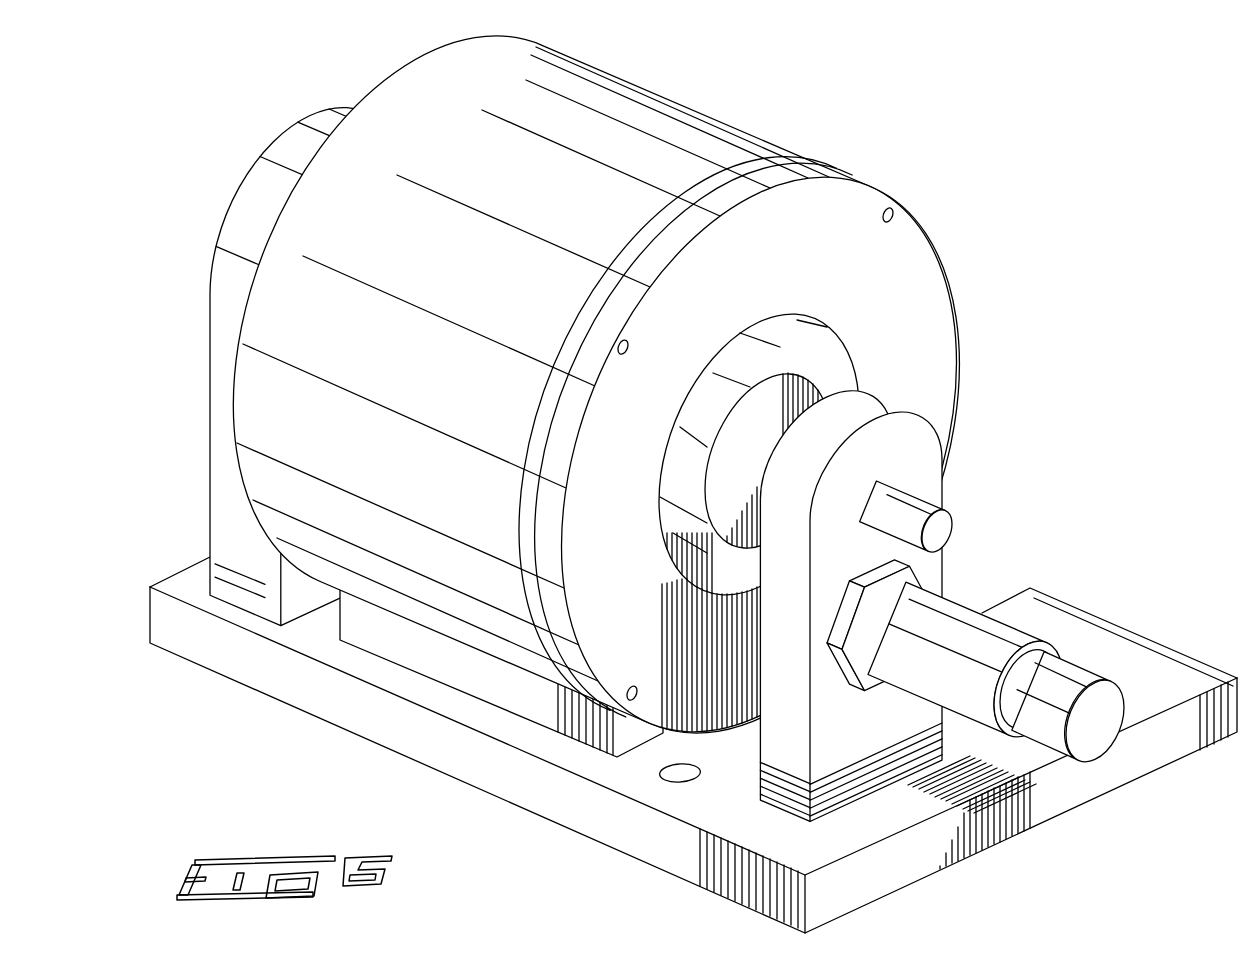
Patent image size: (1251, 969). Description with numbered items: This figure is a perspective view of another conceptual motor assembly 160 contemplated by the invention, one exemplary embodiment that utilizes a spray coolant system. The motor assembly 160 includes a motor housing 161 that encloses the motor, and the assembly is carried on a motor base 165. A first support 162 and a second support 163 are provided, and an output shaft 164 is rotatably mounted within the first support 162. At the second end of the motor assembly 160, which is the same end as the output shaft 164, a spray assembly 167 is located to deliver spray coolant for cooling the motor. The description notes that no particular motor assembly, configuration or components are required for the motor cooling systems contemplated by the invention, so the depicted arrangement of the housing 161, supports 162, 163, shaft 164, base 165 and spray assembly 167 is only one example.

The motor assembly 160 is at (670, 481).
The motor housing 161 is at (455, 273).
The first support 162 is at (885, 752).
The second support 163 is at (241, 535).
The output shaft 164 is at (908, 518).
The motor base 165 is at (758, 822).
The spray assembly 167 is at (838, 267).